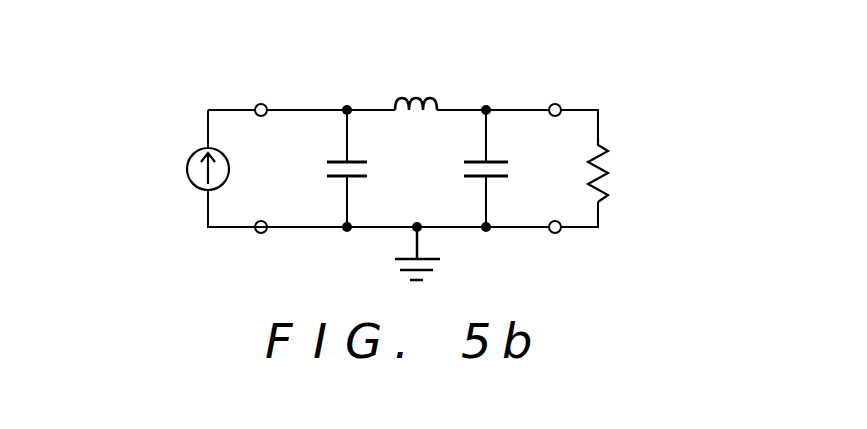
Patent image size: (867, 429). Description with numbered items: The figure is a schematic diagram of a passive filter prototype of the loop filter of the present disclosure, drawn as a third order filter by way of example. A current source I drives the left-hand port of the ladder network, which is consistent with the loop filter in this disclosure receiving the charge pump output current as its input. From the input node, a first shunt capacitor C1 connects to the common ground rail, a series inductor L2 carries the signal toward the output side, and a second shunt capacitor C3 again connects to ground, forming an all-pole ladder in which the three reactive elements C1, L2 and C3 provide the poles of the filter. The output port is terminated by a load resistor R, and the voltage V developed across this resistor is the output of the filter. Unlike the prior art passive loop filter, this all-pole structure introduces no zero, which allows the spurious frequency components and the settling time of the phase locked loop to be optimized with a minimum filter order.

The current source I is at (198, 169).
The inductor L2 is at (416, 91).
The capacitor C1 is at (356, 185).
The capacitor C3 is at (495, 185).
The resistor R is at (588, 170).
The output voltage V is at (658, 195).